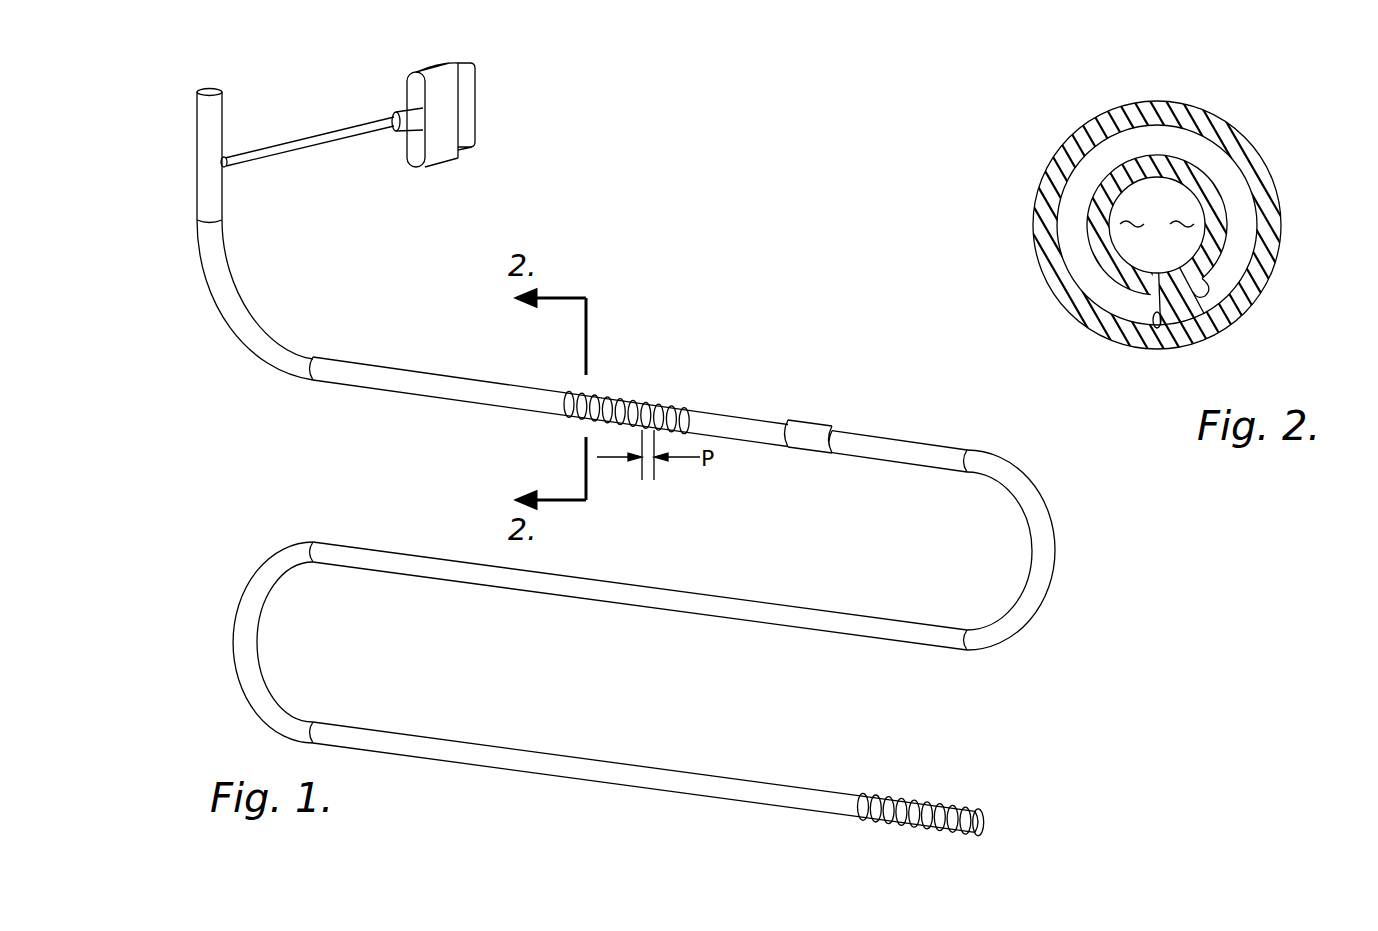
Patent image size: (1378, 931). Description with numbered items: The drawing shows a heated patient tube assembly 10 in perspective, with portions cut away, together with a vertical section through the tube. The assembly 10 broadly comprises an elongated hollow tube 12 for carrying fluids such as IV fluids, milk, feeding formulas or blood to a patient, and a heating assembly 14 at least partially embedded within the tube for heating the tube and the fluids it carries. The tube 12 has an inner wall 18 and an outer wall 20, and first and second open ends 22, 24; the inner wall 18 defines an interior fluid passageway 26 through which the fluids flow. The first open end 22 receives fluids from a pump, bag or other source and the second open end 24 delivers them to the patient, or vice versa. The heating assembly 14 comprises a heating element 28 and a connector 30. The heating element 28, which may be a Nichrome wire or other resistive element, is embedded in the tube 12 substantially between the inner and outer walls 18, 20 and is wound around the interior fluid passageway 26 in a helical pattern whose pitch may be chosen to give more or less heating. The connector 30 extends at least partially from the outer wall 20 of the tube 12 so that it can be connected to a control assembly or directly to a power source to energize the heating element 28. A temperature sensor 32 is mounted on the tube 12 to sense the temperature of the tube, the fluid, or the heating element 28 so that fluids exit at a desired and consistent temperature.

In FIG. 1, the heated patient tube assembly 10 is at (626, 461).
In FIG. 1, the elongated hollow tube 12 is at (387, 380).
In FIG. 2, the elongated hollow tube 12 is at (1161, 225).
In FIG. 1, the heating assembly 14 is at (634, 361).
In FIG. 2, the inner wall 18 is at (1195, 333).
In FIG. 2, the outer wall 20 is at (1265, 276).
In FIG. 1, the first open end 22 is at (397, 111).
In FIG. 1, the second open end 24 is at (1000, 822).
In FIG. 2, the interior fluid passageway 26 is at (1157, 225).
In FIG. 1, the heating element 28 is at (610, 378).
In FIG. 2, the heating element 28 is at (1073, 262).
In FIG. 1, the connector 30 is at (487, 103).
In FIG. 1, the temperature sensor 32 is at (811, 442).